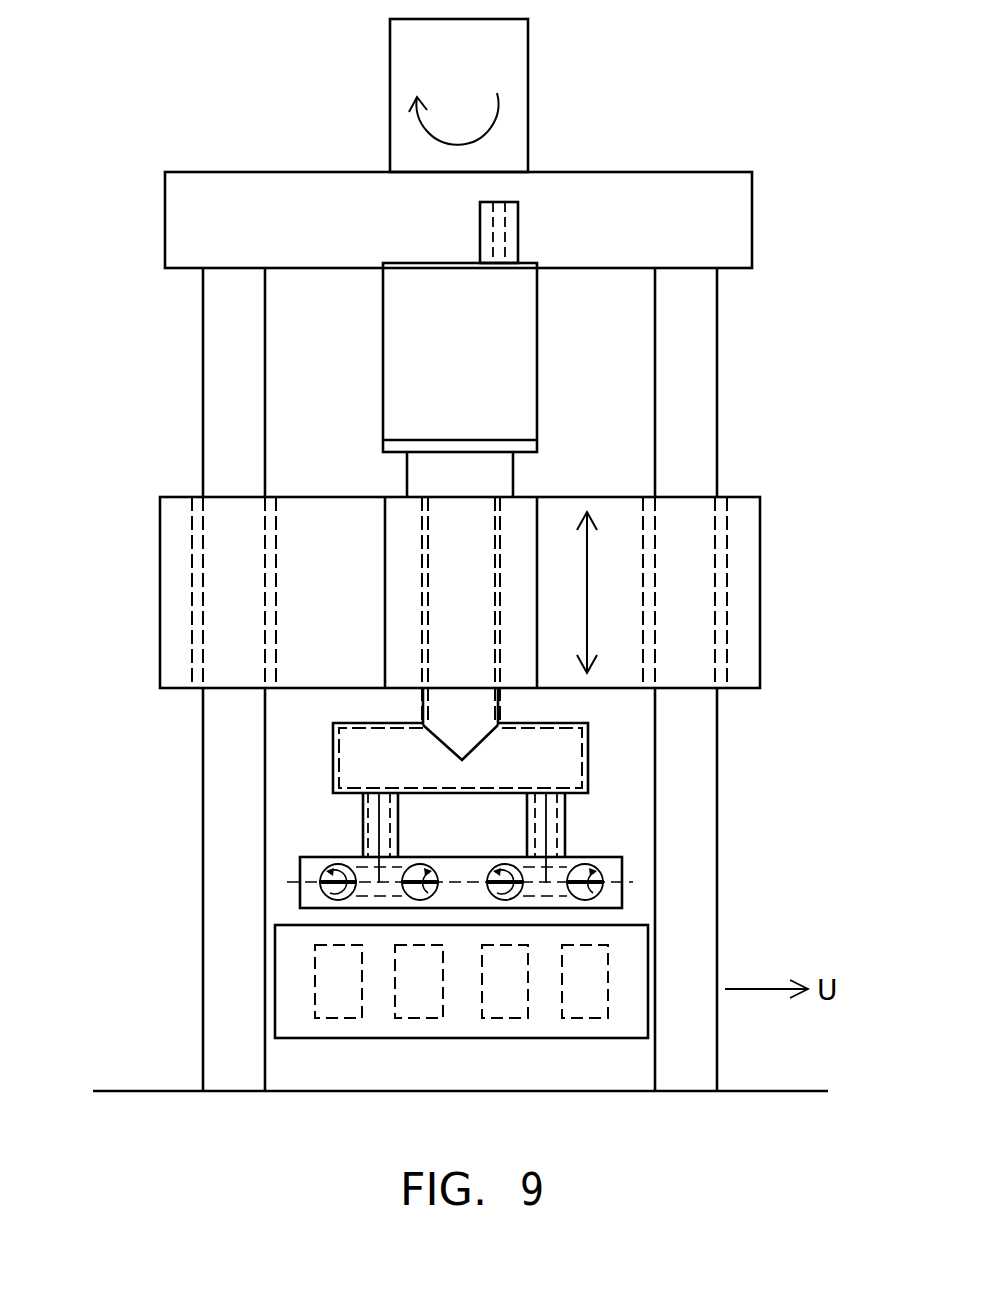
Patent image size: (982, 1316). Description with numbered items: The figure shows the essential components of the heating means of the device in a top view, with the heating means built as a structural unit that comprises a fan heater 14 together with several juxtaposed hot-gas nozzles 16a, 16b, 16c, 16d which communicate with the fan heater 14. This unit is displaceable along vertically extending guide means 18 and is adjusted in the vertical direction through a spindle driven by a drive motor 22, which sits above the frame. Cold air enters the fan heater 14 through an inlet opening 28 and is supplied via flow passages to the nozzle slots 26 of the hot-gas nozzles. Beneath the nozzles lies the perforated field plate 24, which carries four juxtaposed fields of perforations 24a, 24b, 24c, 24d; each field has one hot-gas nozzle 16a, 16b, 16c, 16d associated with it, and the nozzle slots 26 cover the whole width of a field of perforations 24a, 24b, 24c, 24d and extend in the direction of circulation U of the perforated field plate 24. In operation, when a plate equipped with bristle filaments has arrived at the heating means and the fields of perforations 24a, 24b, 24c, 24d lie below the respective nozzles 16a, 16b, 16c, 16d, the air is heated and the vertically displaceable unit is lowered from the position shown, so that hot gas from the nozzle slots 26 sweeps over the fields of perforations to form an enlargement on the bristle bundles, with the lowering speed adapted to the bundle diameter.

The fan heater 14 is at (527, 358).
The hot-gas nozzle 16a is at (323, 852).
The hot-gas nozzle 16b is at (433, 852).
The hot-gas nozzle 16c is at (496, 864).
The hot-gas nozzle 16d is at (592, 864).
The guide means 18 is at (270, 394).
The drive motor 22 is at (522, 96).
The perforated field plate 24 is at (641, 949).
The field of perforations 24a is at (340, 1012).
The field of perforations 24b is at (420, 1012).
The field of perforations 24c is at (507, 1012).
The field of perforations 24d is at (586, 1012).
The nozzle slots 26 is at (607, 876).
The inlet opening 28 is at (517, 200).